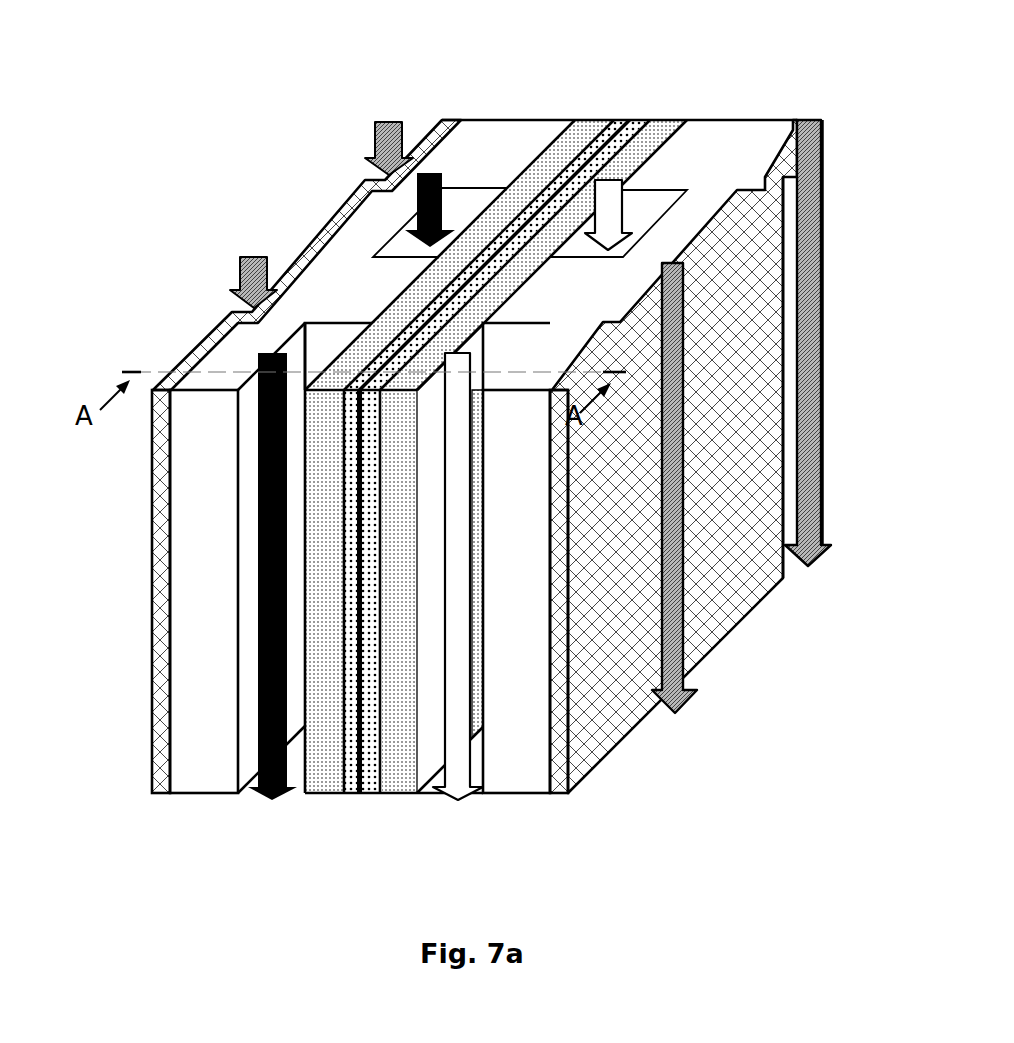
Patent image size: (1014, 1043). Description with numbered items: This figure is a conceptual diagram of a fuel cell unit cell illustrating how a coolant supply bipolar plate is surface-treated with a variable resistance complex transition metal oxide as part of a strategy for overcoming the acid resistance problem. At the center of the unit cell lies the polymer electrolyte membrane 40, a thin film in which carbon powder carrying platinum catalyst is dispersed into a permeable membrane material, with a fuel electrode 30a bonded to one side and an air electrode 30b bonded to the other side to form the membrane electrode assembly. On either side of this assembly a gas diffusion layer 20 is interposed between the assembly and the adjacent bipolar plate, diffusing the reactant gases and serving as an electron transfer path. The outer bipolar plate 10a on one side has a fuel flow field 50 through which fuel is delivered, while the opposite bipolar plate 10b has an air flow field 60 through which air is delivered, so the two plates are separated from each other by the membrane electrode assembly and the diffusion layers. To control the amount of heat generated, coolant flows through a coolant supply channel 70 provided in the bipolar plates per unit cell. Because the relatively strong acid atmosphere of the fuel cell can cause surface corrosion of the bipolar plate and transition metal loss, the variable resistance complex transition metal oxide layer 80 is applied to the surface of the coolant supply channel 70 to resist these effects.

The bipolar plate 10a is at (493, 133).
The bipolar plate 10b is at (730, 168).
The gas diffusion layer 20 is at (592, 130).
The fuel electrode 30a is at (618, 130).
The air electrode 30b is at (637, 128).
The polymer electrolyte membrane 40 is at (357, 777).
The fuel flow field 50 is at (258, 353).
The air flow field 60 is at (612, 224).
The coolant supply channel 70 is at (380, 135).
The variable resistance complex transition metal oxide layer 80 is at (158, 749).